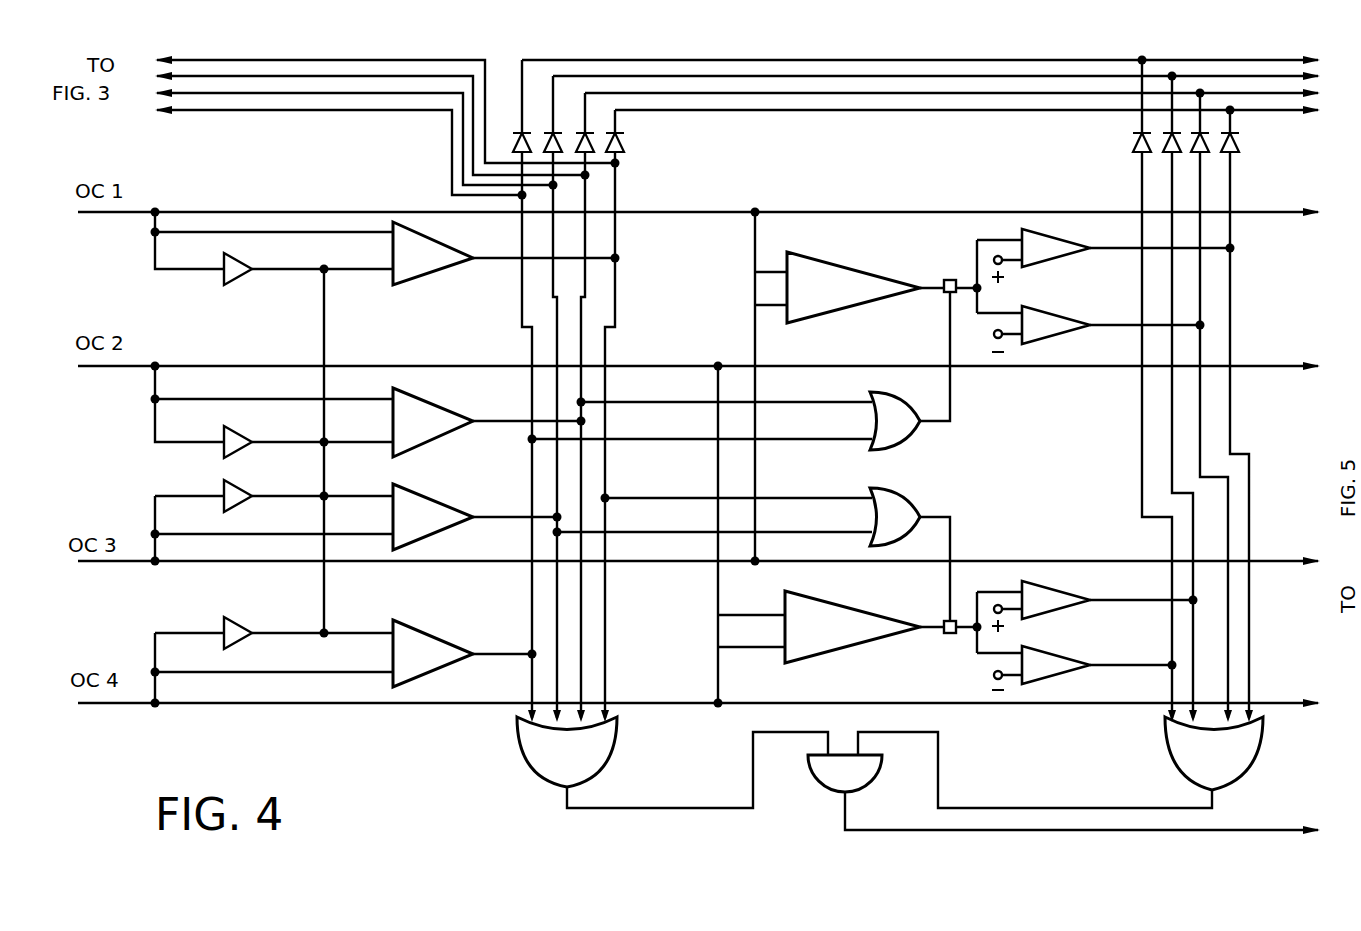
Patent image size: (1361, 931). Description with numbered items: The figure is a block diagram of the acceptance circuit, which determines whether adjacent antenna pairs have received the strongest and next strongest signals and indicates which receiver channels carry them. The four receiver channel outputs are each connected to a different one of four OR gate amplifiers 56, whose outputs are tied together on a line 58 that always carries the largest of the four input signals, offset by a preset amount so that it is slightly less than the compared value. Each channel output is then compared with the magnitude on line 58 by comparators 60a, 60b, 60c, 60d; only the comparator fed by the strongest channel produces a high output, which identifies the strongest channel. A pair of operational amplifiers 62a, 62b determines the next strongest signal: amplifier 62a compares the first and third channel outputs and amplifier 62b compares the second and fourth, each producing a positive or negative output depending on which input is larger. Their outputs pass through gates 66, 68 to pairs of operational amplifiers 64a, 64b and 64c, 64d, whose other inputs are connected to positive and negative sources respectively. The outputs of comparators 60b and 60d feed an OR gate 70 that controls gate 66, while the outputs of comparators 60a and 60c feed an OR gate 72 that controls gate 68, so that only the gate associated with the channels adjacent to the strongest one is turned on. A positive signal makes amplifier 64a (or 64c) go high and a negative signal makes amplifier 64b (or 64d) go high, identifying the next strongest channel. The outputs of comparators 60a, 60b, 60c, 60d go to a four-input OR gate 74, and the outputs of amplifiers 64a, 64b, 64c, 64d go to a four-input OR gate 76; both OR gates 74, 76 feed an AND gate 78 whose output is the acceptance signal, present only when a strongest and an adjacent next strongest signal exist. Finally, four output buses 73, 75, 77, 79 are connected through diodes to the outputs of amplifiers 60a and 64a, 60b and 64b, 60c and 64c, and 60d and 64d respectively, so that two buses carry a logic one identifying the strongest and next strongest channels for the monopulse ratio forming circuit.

The OR gate amplifier 56 is at (238, 279).
The line 58 is at (326, 318).
The comparator 60a is at (428, 275).
The comparator 60b is at (437, 403).
The comparator 60c is at (437, 501).
The comparator 60d is at (438, 633).
The operational amplifier 62a is at (883, 252).
The operational amplifier 62b is at (896, 586).
The operational amplifier 64a is at (1048, 234).
The operational amplifier 64b is at (1048, 308).
The operational amplifier 64c is at (1052, 589).
The operational amplifier 64d is at (1065, 653).
The gate 66 is at (950, 278).
The gate 68 is at (950, 636).
The OR gate 70 is at (918, 437).
The OR gate 72 is at (918, 496).
The output bus 73 is at (798, 112).
The four-input OR gate 74 is at (517, 748).
The output bus 75 is at (893, 95).
The four-input OR gate 76 is at (1165, 756).
The output bus 77 is at (993, 78).
The AND gate 78 is at (828, 794).
The output bus 79 is at (1073, 62).